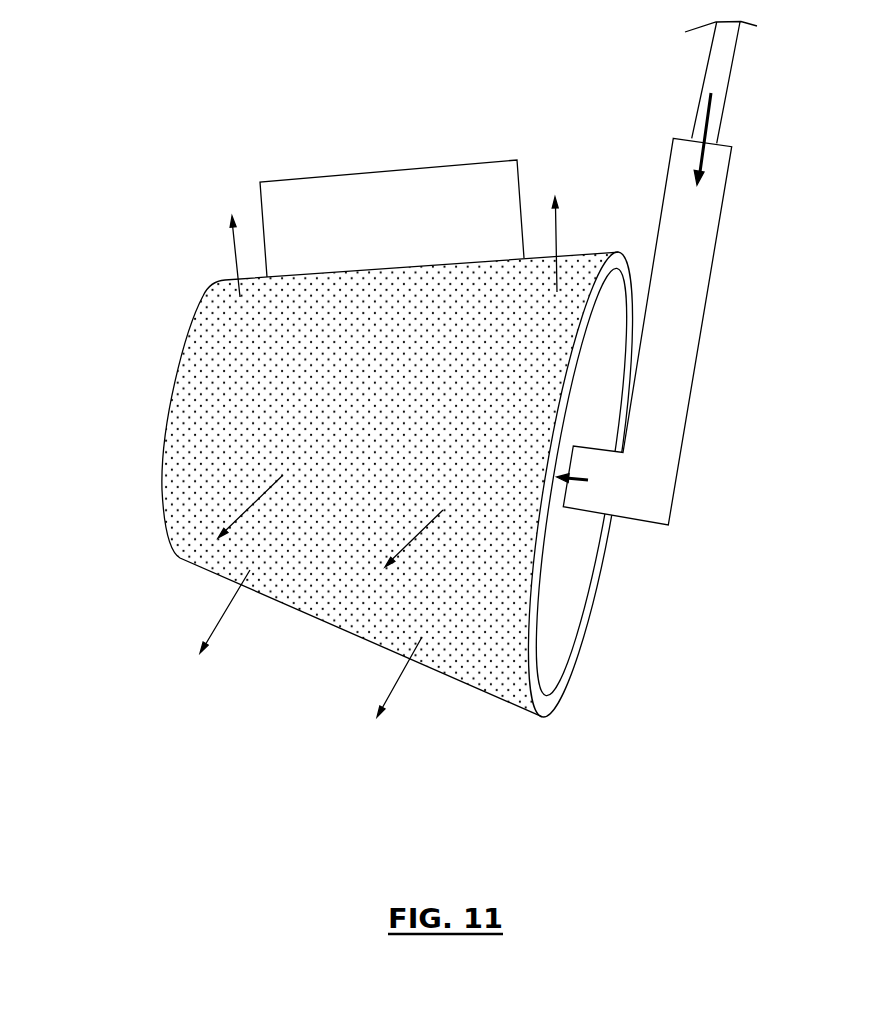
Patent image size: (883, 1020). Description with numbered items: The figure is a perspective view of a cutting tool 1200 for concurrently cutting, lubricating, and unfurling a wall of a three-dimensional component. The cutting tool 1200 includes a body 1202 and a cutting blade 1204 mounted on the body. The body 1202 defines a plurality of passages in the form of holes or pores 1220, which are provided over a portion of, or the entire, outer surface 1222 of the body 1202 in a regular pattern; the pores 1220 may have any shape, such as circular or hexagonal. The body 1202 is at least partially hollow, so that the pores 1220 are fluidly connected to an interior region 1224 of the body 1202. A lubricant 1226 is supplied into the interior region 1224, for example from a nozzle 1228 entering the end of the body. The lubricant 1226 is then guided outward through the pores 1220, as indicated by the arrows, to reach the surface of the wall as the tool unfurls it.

The cutting tool 1200 is at (454, 404).
The body 1202 is at (228, 401).
The cutting blade 1204 is at (393, 195).
The pores 1220 is at (240, 297).
The outer surface 1222 is at (447, 315).
The interior region 1224 is at (582, 547).
The lubricant 1226 is at (234, 247).
The nozzle 1228 is at (692, 305).